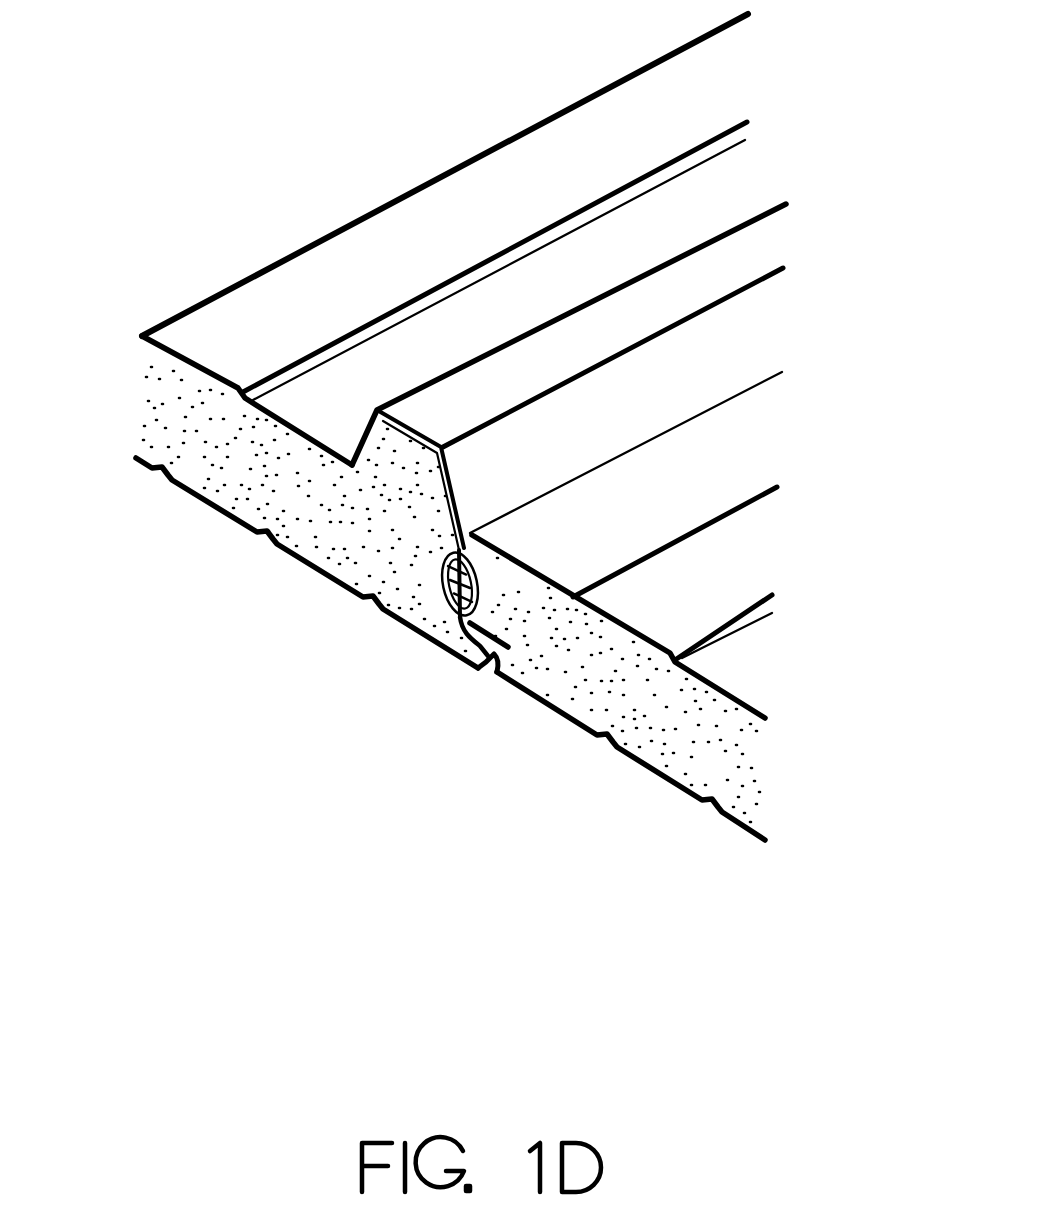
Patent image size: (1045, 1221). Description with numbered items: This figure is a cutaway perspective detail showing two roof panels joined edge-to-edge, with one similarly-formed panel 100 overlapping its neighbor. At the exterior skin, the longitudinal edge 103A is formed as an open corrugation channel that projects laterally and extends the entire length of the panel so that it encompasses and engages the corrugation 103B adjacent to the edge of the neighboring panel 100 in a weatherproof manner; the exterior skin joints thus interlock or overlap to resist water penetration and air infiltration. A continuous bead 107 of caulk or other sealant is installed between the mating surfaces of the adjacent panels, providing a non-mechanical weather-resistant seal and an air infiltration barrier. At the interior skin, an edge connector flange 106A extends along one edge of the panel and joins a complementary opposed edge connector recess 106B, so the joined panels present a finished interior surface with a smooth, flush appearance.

The panel 100 is at (452, 238).
The longitudinal edge 103A is at (442, 410).
The corrugation 103B is at (407, 437).
The edge connector flange 106A is at (455, 660).
The edge connector recess 106B is at (498, 668).
The bead 107 is at (478, 598).